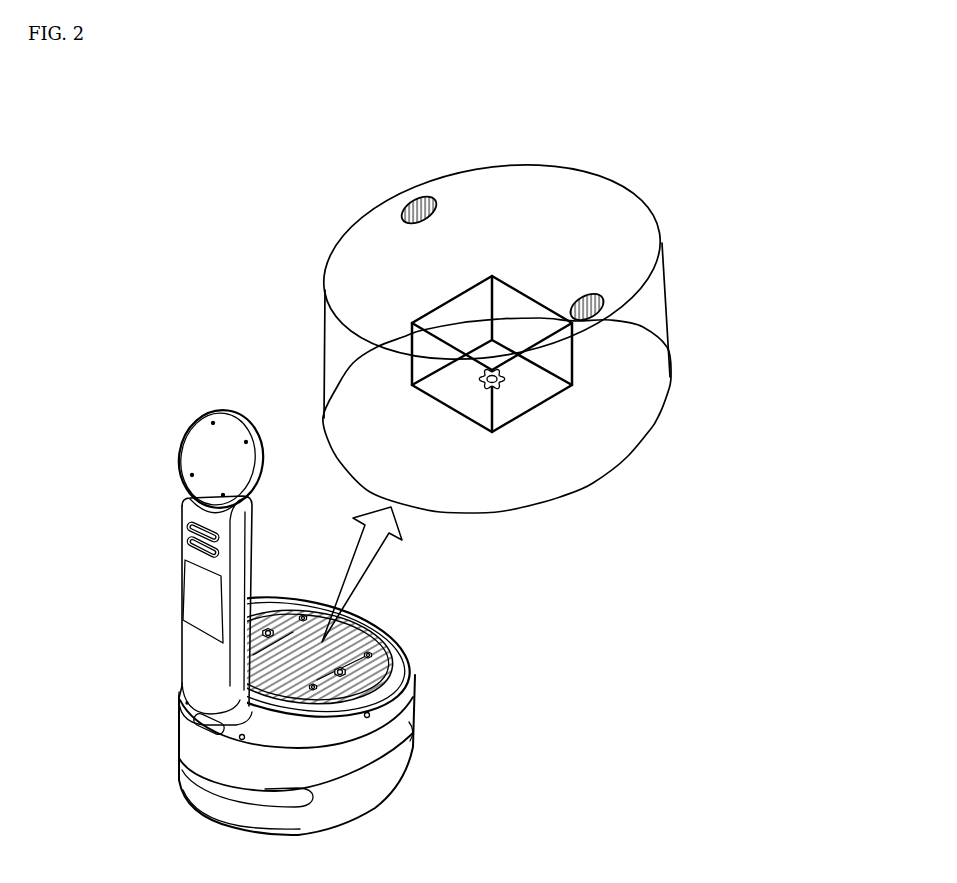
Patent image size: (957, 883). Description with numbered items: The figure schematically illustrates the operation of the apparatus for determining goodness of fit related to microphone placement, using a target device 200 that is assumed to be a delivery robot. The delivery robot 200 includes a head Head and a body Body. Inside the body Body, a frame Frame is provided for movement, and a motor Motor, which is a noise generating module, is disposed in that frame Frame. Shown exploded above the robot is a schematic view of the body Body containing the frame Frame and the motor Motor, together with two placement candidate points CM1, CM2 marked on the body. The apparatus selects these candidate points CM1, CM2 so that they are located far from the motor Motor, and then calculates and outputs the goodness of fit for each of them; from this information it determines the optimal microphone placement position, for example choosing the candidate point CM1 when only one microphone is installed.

The target device 200 is at (180, 418).
The head Head is at (182, 549).
The body Body is at (188, 742).
The frame Frame is at (575, 362).
The motor Motor is at (506, 382).
The placement candidate point CM1 is at (600, 292).
The placement candidate point CM2 is at (418, 200).